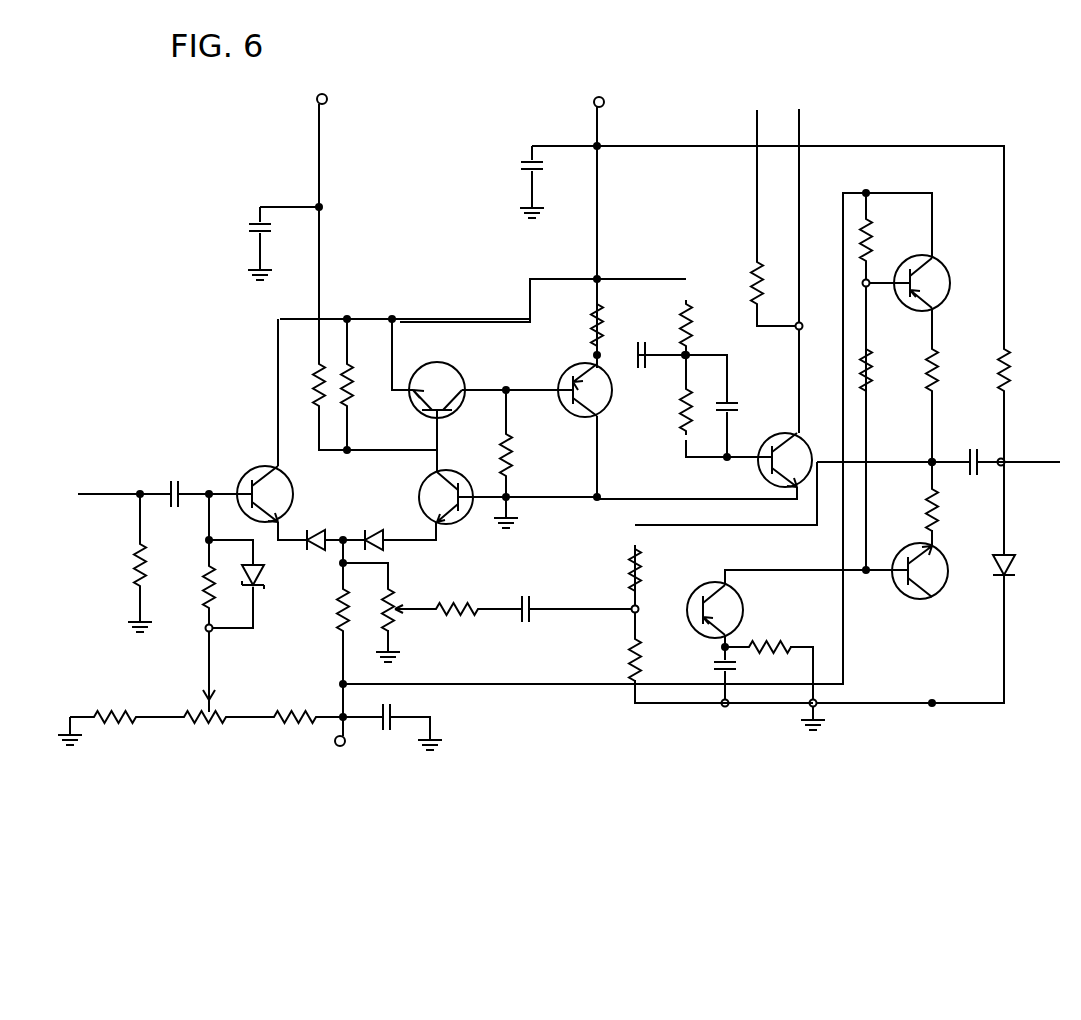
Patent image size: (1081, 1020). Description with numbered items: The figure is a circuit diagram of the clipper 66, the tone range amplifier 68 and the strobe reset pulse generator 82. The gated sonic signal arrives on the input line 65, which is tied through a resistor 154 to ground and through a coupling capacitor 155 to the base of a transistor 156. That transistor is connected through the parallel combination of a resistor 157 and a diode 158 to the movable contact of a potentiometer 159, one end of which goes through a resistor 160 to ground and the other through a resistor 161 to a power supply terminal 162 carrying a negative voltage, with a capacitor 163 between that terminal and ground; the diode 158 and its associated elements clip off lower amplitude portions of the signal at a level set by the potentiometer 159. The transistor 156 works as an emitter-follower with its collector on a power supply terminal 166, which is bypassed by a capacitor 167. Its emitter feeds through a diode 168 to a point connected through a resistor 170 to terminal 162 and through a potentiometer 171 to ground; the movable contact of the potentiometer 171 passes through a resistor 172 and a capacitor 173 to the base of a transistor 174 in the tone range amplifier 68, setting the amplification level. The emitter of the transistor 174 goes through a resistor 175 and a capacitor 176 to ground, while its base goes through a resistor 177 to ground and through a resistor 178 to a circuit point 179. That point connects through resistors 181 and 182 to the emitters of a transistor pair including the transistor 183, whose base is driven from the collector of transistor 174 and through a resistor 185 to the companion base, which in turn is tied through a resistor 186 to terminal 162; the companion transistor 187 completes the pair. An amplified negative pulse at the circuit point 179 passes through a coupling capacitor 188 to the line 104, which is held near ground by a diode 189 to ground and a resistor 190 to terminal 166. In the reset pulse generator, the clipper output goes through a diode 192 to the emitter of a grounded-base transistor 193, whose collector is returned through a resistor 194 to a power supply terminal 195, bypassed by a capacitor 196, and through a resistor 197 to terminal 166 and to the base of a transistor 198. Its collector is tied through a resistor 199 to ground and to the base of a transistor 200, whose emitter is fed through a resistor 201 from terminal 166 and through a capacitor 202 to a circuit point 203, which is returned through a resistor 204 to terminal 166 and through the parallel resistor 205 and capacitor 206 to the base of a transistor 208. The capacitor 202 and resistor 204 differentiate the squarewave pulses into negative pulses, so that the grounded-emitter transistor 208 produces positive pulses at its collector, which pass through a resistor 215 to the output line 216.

The input line 65 is at (108, 490).
The clipper 66 is at (214, 433).
The tone range amplifier 68 is at (700, 727).
The strobe reset pulse generator 82 is at (483, 296).
The line 104 is at (1013, 464).
The resistor 154 is at (134, 562).
The coupling capacitor 155 is at (181, 491).
The transistor 156 is at (280, 494).
The resistor 157 is at (203, 571).
The diode 158 is at (260, 572).
The potentiometer 159 is at (190, 724).
The resistor 160 is at (108, 726).
The resistor 161 is at (275, 724).
The power supply terminal 162 is at (345, 745).
The capacitor 163 is at (393, 717).
The power supply terminal 166 is at (605, 103).
The capacitor 167 is at (536, 168).
The diode 168 is at (313, 538).
The resistor 170 is at (338, 620).
The potentiometer 171 is at (391, 603).
The resistor 172 is at (440, 614).
The capacitor 173 is at (528, 618).
The transistor 174 is at (730, 606).
The resistor 175 is at (763, 645).
The capacitor 176 is at (716, 660).
The resistor 177 is at (627, 652).
The resistor 178 is at (640, 572).
The circuit point 179 is at (928, 460).
The resistor 181 is at (936, 505).
The resistor 182 is at (937, 376).
The transistor 183 is at (905, 606).
The resistor 185 is at (862, 375).
The resistor 186 is at (862, 250).
The transistor 187 is at (942, 289).
The coupling capacitor 188 is at (967, 458).
The diode 189 is at (990, 566).
The resistor 190 is at (1005, 372).
The diode 192 is at (381, 547).
The transistor 193 is at (453, 483).
The resistor 194 is at (313, 402).
The power supply terminal 195 is at (326, 104).
The capacitor 196 is at (258, 232).
The resistor 197 is at (347, 380).
The transistor 198 is at (441, 386).
The resistor 199 is at (507, 455).
The transistor 200 is at (598, 404).
The resistor 201 is at (600, 320).
The capacitor 202 is at (654, 342).
The circuit point 203 is at (690, 357).
The resistor 204 is at (690, 322).
The resistor 205 is at (684, 425).
The capacitor 206 is at (736, 407).
The transistor 208 is at (761, 478).
The resistor 215 is at (755, 277).
The line 216 is at (757, 187).